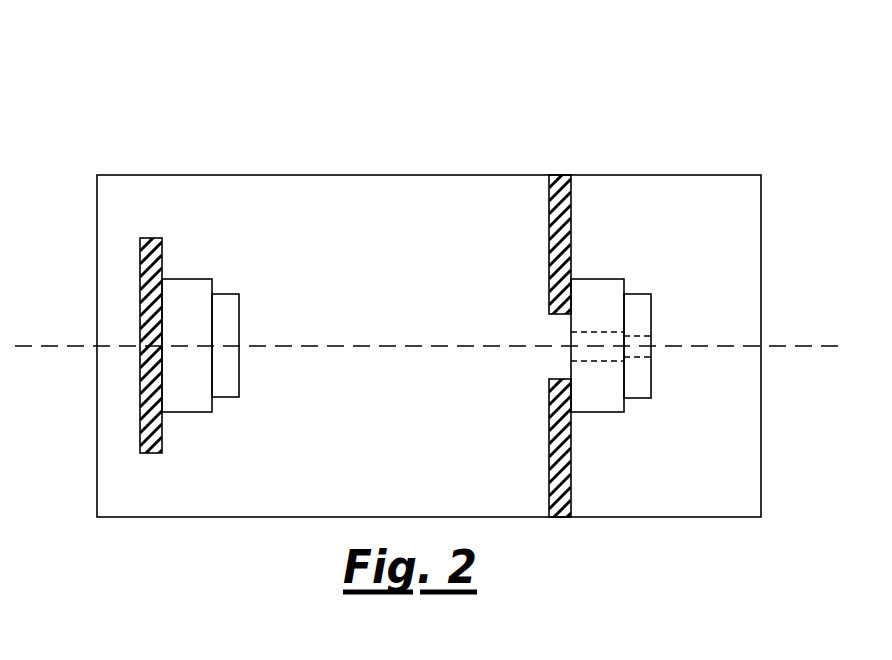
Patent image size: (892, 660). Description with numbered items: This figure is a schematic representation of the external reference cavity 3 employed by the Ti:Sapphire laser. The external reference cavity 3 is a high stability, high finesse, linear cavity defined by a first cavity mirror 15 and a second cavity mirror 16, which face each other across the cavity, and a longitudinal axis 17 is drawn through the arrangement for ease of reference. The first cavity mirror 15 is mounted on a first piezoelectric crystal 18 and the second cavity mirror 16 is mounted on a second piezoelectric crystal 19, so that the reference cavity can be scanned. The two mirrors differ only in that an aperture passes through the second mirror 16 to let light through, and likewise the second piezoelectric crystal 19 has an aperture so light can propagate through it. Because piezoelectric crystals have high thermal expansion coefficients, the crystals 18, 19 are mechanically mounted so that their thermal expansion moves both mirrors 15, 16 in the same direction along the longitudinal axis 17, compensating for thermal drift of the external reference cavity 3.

The external reference cavity 3 is at (560, 110).
The first cavity mirror 15 is at (228, 306).
The second cavity mirror 16 is at (642, 308).
The longitudinal axis 17 is at (47, 349).
The first piezoelectric crystal 18 is at (188, 293).
The second piezoelectric crystal 19 is at (600, 292).